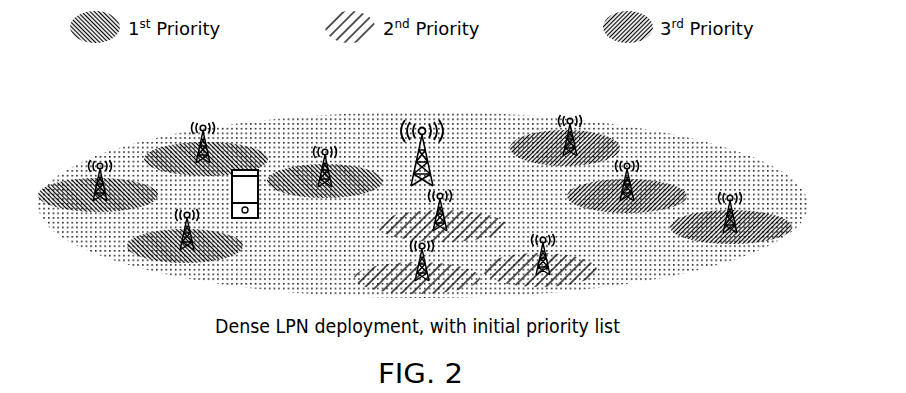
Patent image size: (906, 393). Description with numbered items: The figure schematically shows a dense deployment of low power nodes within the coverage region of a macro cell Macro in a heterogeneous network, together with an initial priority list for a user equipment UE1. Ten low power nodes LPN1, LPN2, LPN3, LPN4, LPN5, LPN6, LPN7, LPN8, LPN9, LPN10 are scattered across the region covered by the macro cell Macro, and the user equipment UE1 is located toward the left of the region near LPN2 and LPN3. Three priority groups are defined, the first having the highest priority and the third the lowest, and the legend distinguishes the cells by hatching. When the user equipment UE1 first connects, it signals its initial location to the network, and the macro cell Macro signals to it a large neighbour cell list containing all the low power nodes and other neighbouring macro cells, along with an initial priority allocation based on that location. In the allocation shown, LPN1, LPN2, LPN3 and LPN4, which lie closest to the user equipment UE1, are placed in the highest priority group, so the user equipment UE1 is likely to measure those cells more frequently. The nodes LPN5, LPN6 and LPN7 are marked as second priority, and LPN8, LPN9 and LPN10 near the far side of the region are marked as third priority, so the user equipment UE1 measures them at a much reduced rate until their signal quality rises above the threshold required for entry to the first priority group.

The low power node LPN1 is at (98, 176).
The low power node LPN2 is at (206, 138).
The low power node LPN3 is at (185, 227).
The low power node LPN4 is at (325, 160).
The low power node LPN5 is at (442, 211).
The low power node LPN6 is at (416, 266).
The low power node LPN7 is at (540, 247).
The low power node LPN8 is at (565, 127).
The low power node LPN9 is at (627, 176).
The low power node LPN10 is at (731, 208).
The macro cell Macro is at (422, 138).
The user equipment UE1 is at (259, 205).